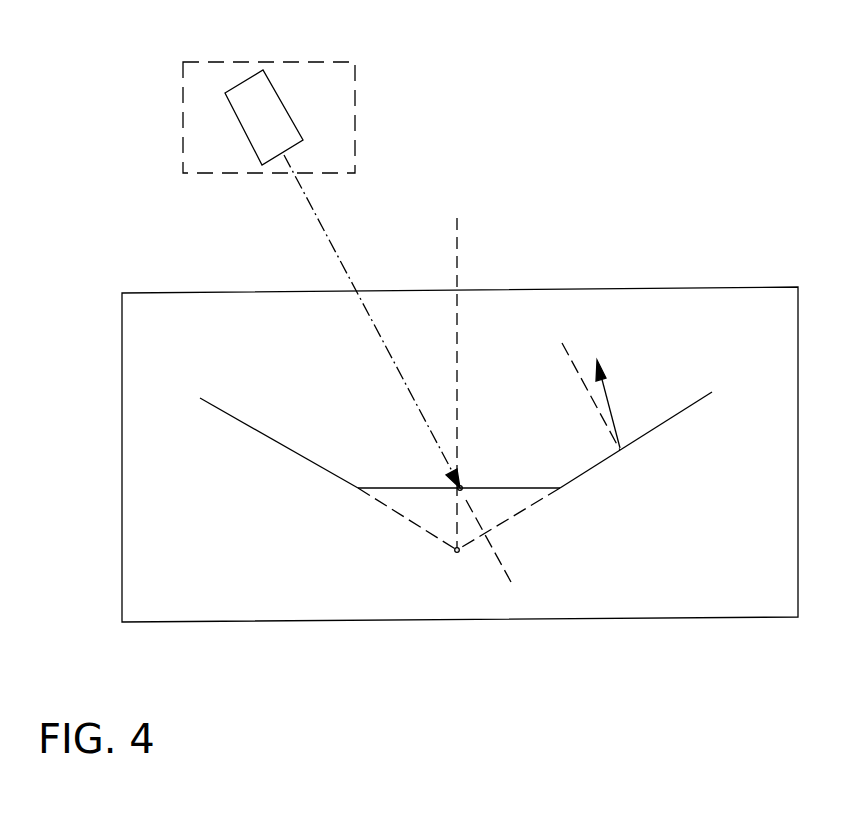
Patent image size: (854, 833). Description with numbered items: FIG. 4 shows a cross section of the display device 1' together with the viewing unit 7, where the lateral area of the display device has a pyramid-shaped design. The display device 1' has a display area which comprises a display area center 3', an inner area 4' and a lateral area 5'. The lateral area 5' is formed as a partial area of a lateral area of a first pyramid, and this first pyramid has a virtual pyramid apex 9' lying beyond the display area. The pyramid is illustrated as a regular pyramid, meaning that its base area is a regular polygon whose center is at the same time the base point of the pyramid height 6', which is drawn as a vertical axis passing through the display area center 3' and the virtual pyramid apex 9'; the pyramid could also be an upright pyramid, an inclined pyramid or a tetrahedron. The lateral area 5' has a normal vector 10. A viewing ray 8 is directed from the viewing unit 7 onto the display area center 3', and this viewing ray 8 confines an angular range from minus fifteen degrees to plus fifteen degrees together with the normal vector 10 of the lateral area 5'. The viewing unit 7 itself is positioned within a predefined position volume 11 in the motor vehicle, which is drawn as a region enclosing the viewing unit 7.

The display device 1' is at (460, 487).
The display area center 3' is at (488, 451).
The inner area 4' is at (471, 449).
The lateral area 5' is at (636, 403).
The pyramid height 6' is at (495, 360).
The viewing unit 7 is at (273, 107).
The viewing ray 8 is at (313, 210).
The virtual pyramid apex 9' is at (459, 549).
The normal vector 10 is at (610, 403).
The predefined position volume 11 is at (335, 105).